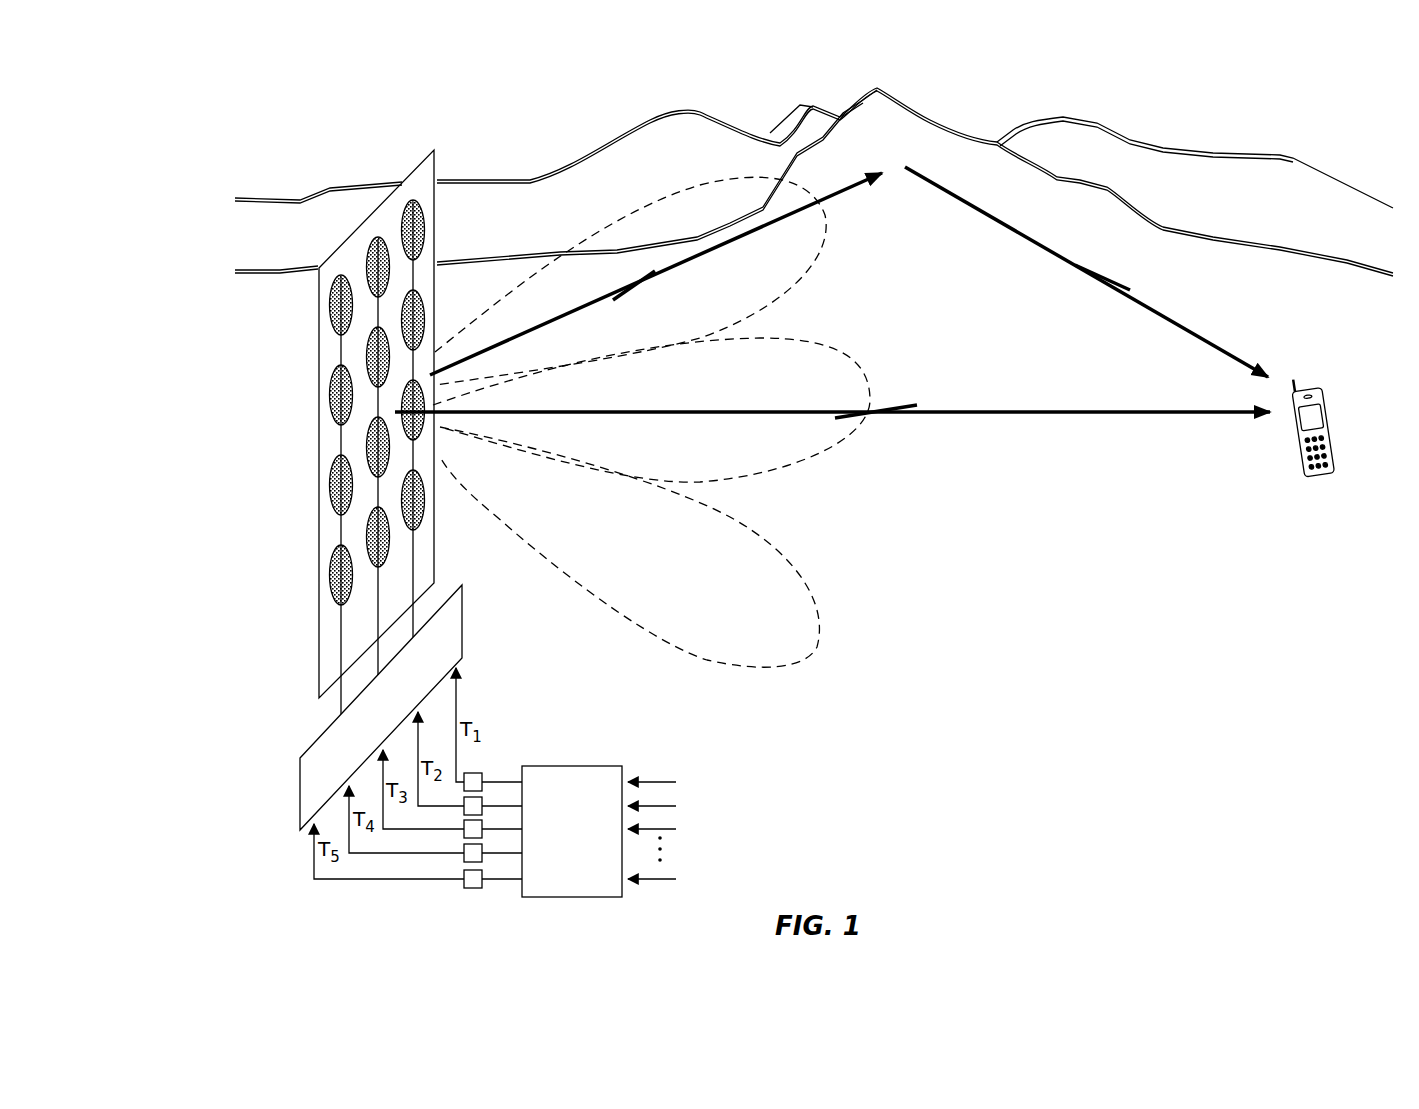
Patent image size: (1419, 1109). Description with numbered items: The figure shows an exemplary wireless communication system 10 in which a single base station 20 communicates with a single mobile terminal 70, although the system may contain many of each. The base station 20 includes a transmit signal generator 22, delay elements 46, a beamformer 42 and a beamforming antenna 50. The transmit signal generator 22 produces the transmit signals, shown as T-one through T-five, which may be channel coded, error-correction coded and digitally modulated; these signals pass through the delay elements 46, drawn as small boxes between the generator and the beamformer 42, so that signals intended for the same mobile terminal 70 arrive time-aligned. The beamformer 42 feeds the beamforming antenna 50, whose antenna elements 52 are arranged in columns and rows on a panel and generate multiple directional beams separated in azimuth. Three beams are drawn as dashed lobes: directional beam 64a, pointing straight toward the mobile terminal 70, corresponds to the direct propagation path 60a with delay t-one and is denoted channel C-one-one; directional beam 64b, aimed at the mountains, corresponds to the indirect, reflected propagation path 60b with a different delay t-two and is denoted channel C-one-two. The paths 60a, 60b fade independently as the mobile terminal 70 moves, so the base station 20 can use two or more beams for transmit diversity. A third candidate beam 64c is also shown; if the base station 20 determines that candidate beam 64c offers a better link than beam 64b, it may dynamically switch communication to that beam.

The wireless communication system 10 is at (1048, 580).
The base station 20 is at (200, 597).
The transmit signal generator 22 is at (588, 766).
The beamformer 42 is at (462, 626).
The delay elements 46 is at (465, 888).
The beamforming antenna 50 is at (319, 418).
The antenna elements 52 is at (355, 424).
The propagation path 60a is at (1048, 410).
The propagation path 60b is at (690, 270).
The directional beam 64a is at (823, 350).
The directional beam 64b is at (668, 190).
The candidate beam 64c is at (657, 642).
The mobile terminal 70 is at (1338, 450).